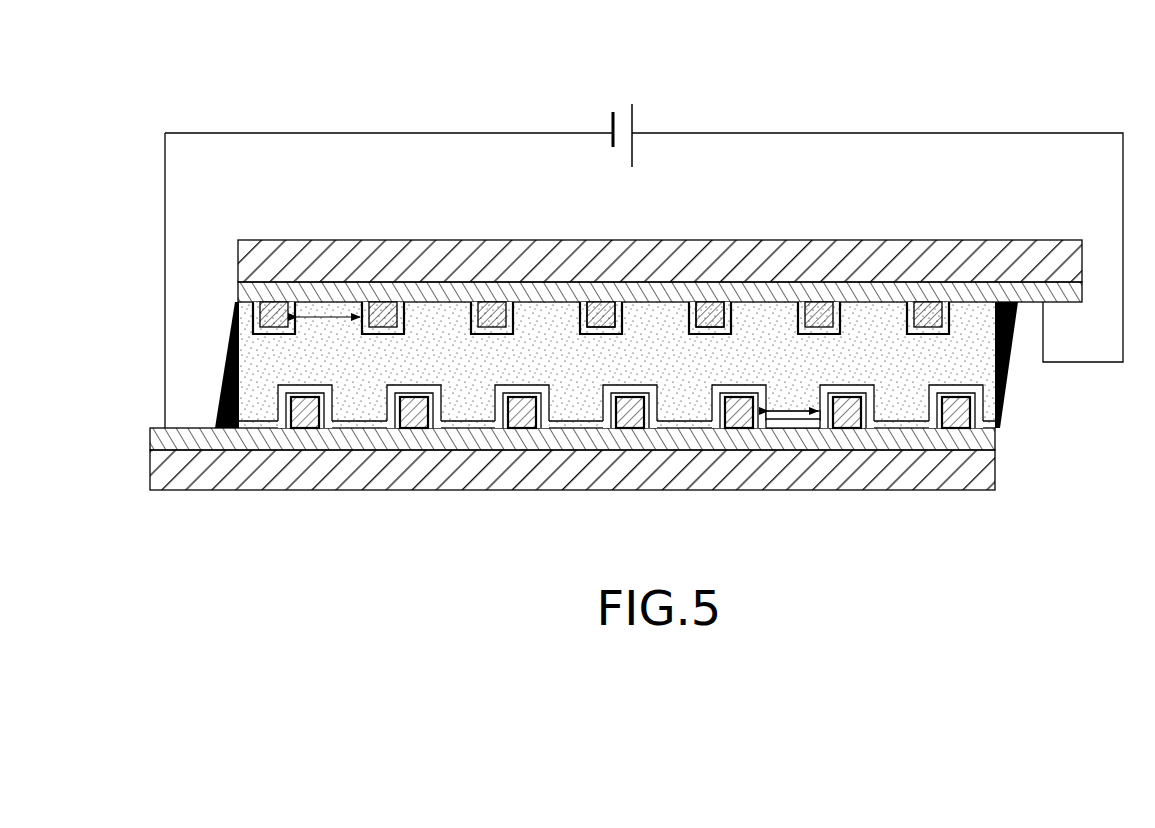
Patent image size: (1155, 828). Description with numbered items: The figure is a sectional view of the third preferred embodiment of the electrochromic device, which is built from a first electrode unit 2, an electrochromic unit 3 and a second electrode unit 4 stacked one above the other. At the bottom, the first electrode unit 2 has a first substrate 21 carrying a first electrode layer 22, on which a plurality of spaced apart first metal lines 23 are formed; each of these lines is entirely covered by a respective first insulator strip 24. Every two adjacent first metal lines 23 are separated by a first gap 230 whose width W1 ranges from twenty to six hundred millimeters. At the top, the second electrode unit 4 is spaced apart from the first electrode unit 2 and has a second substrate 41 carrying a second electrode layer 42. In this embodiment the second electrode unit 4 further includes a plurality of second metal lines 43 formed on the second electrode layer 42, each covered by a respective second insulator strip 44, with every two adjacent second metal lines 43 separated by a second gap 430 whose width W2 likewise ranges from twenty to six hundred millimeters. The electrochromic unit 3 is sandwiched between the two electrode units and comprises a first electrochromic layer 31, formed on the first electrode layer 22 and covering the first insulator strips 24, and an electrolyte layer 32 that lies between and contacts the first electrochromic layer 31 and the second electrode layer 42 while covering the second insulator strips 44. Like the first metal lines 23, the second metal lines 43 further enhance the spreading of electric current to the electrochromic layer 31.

The first electrode unit 2 is at (595, 383).
The first substrate 21 is at (882, 462).
The first electrode layer 22 is at (987, 437).
The first metal lines 23 is at (407, 413).
The first insulator strips 24 is at (613, 423).
The first gap 230 is at (790, 400).
The electrochromic unit 3 is at (631, 356).
The first electrochromic layer 31 is at (958, 372).
The electrolyte layer 32 is at (250, 360).
The second electrode unit 4 is at (678, 238).
The second substrate 41 is at (908, 257).
The second electrode layer 42 is at (1075, 293).
The second metal lines 43 is at (488, 313).
The second insulator strips 44 is at (687, 303).
The second gap 430 is at (333, 304).
The width of the first gap W1 is at (783, 430).
The width of the second gap W2 is at (320, 313).